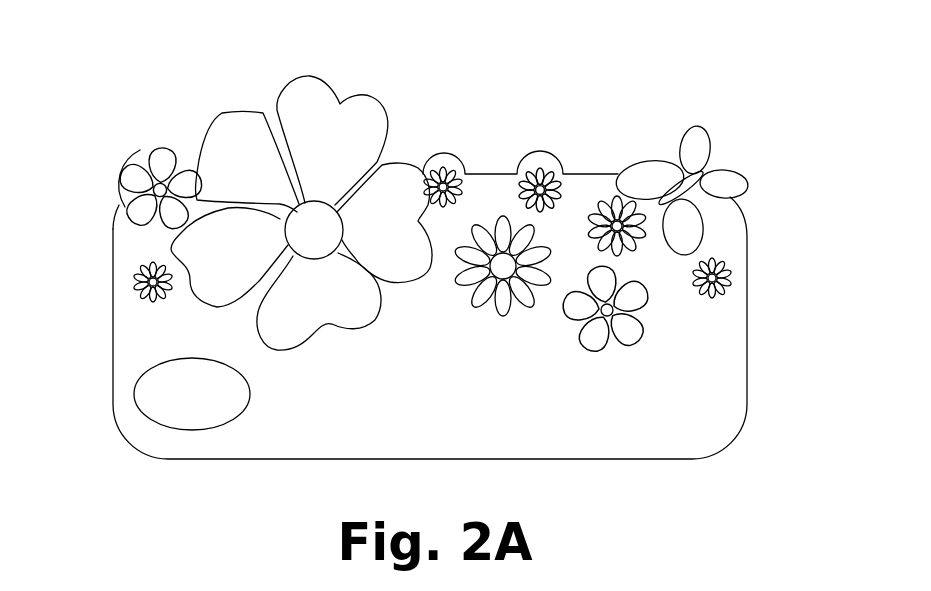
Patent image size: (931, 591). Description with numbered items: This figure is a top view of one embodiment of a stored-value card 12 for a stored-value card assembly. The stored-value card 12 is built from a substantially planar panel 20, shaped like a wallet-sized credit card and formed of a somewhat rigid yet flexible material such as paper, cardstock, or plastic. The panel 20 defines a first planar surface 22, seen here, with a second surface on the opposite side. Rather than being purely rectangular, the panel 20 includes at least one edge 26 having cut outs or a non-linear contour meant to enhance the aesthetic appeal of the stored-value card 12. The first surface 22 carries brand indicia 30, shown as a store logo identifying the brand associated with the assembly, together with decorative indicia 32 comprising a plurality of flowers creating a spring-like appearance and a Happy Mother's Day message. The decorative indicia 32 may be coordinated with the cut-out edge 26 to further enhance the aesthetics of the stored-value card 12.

The stored-value card 12 is at (440, 259).
The panel 20 is at (748, 340).
The first planar surface 22 is at (725, 398).
The edge 26 is at (333, 82).
The brand indicia 30 is at (173, 430).
The decorative indicia 32 is at (263, 373).